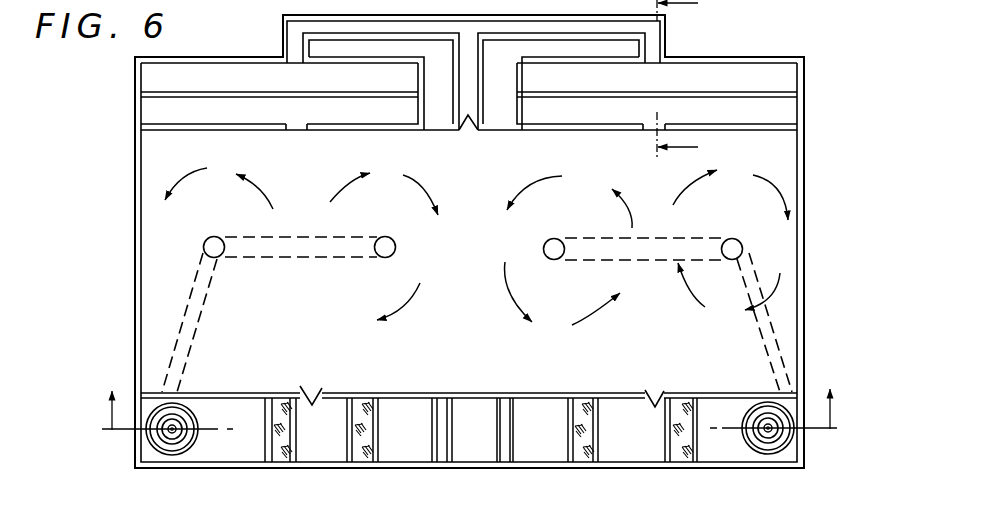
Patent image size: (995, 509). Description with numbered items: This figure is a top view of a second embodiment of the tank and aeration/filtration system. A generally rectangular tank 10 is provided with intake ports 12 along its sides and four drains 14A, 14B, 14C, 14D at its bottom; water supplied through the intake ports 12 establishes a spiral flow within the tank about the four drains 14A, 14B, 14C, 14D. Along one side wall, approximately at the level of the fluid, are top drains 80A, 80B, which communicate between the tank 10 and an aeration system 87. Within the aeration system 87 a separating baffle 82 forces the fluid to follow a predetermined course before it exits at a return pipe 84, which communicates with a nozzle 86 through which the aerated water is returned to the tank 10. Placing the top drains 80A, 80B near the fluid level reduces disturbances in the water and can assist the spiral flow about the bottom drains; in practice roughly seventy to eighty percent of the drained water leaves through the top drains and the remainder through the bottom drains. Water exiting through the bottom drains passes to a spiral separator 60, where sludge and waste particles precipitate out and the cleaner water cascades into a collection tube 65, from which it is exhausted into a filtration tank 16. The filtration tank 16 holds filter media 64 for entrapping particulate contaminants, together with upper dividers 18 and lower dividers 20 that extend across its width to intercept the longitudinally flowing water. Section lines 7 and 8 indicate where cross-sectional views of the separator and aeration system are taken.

The section line 7- 7 is at (474, 409).
The section line 8- 8 is at (677, 85).
The tank 10 is at (806, 291).
The intake ports 12 is at (313, 390).
The drain 14A is at (210, 244).
The drain 14B is at (384, 241).
The drain 14C is at (554, 240).
The drain 14D is at (736, 241).
The filtration tank 16 is at (427, 470).
The upper dividers 18 is at (298, 447).
The lower dividers 20 is at (563, 447).
The spiral separator 60 is at (192, 412).
The filter media 64 is at (277, 453).
The collection tube 65 is at (172, 443).
The top drain 80A is at (297, 131).
The top drain 80B is at (650, 131).
The separating baffle 82 is at (236, 97).
The return pipe 84 is at (667, 42).
The nozzle 86 is at (468, 134).
The aeration system 87 is at (135, 98).